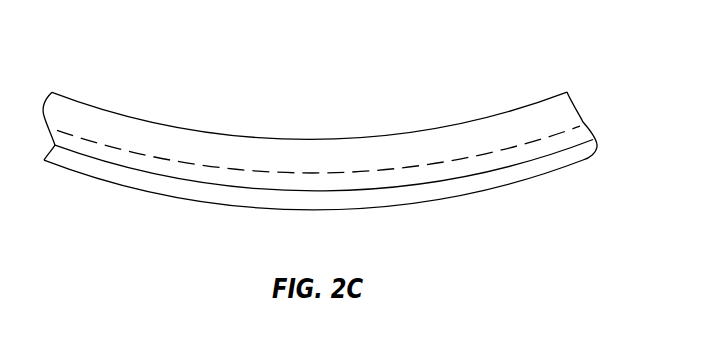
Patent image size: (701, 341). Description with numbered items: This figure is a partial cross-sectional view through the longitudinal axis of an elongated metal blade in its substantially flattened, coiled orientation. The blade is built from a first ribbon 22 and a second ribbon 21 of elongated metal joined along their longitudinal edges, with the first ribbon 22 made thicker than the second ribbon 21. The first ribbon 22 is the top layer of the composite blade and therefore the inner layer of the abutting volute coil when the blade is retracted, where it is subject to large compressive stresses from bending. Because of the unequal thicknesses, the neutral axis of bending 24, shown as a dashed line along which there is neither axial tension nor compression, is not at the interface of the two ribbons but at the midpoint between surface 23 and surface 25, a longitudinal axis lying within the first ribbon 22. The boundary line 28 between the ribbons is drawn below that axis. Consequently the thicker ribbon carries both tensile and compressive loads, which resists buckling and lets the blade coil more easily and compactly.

The second ribbon 21 is at (92, 167).
The first ribbon 22 is at (98, 122).
The surface 23 is at (310, 210).
The neutral axis of bending 24 is at (540, 140).
The surface 25 is at (310, 138).
The interface edge 28 is at (462, 180).